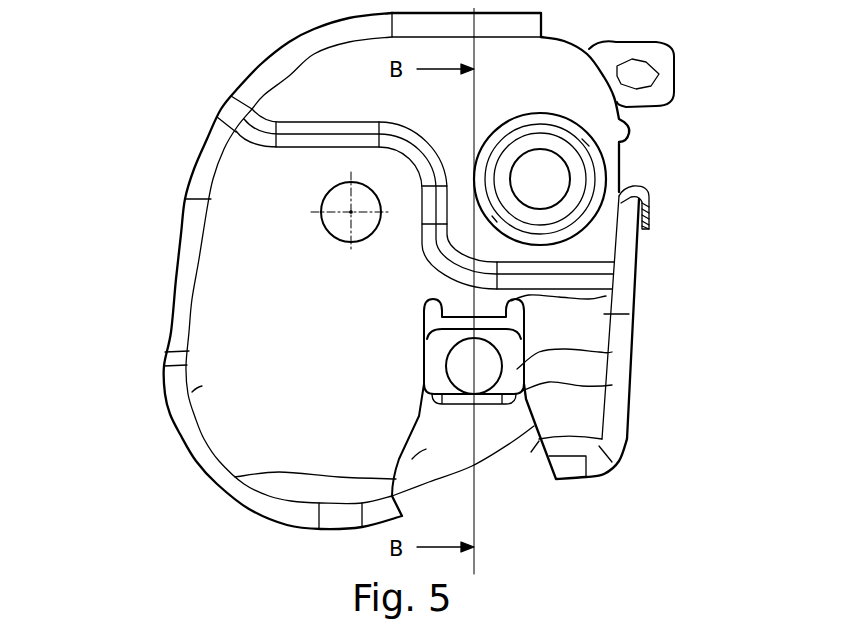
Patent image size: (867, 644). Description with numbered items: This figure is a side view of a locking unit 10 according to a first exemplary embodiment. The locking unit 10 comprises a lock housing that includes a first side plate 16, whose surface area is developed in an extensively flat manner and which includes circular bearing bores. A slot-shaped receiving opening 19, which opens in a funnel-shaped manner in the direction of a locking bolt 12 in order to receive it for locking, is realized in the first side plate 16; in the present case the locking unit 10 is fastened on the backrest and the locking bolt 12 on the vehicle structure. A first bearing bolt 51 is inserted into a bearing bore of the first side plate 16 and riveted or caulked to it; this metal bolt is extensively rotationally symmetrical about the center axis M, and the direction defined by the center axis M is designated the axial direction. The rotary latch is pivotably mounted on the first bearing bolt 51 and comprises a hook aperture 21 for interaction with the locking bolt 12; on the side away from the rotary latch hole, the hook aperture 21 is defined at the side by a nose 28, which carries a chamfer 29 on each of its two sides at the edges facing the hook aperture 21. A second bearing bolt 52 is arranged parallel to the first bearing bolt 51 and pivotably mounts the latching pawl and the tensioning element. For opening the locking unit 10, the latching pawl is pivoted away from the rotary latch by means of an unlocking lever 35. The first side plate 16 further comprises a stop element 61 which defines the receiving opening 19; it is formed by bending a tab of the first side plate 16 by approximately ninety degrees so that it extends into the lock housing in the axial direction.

The locking unit 10 is at (140, 67).
The locking bolt 12 is at (458, 365).
The first side plate 16 is at (200, 390).
The receiving opening 19 is at (627, 440).
The hook aperture 21 is at (613, 353).
The nose 28 is at (233, 477).
The chamfer 29 is at (613, 386).
The unlocking lever 35 is at (653, 53).
The first bearing bolt 51 is at (327, 200).
The second bearing bolt 52 is at (540, 178).
The stop element 61 is at (607, 297).
The center axis M is at (345, 240).